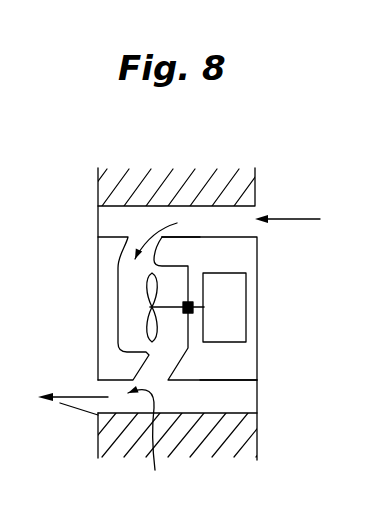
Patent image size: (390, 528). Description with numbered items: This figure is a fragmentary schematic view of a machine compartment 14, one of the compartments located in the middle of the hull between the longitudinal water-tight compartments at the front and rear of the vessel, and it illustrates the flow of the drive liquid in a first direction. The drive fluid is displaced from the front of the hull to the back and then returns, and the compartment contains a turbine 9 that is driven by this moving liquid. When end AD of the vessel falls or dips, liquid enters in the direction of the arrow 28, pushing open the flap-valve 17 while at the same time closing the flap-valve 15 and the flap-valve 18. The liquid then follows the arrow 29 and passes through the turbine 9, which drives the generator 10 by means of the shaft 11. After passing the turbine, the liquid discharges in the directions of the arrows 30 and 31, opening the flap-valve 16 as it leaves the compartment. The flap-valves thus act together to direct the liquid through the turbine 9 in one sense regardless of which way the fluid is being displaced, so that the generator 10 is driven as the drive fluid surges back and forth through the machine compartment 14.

The turbine 9 is at (147, 332).
The generator 10 is at (235, 298).
The shaft 11 is at (183, 310).
The machine compartment 14 is at (268, 398).
The flap-valve 15 is at (98, 222).
The flap-valve 16 is at (81, 416).
The flap-valve 17 is at (223, 217).
The flap-valve 18 is at (262, 387).
The arrow 28 is at (322, 202).
The arrow 29 is at (177, 223).
The arrow 30 is at (153, 436).
The arrow 31 is at (62, 396).